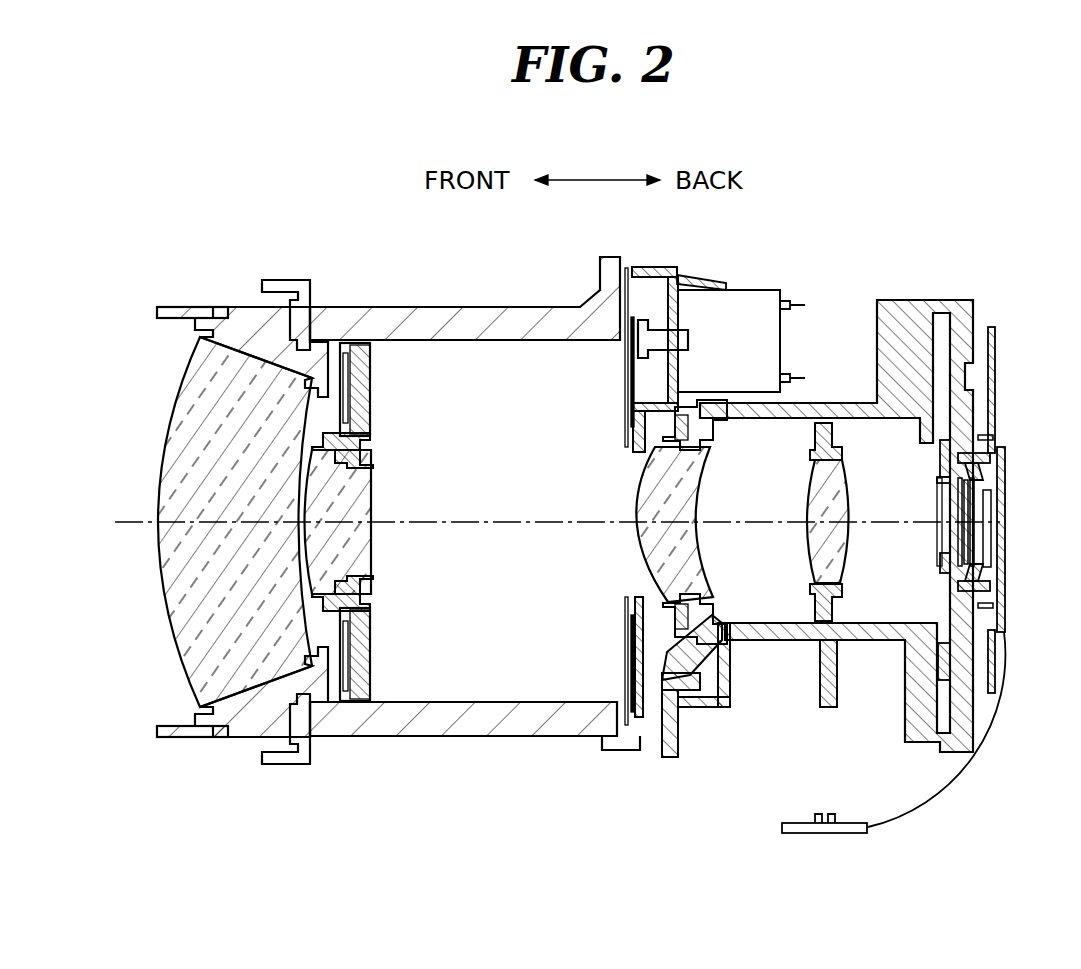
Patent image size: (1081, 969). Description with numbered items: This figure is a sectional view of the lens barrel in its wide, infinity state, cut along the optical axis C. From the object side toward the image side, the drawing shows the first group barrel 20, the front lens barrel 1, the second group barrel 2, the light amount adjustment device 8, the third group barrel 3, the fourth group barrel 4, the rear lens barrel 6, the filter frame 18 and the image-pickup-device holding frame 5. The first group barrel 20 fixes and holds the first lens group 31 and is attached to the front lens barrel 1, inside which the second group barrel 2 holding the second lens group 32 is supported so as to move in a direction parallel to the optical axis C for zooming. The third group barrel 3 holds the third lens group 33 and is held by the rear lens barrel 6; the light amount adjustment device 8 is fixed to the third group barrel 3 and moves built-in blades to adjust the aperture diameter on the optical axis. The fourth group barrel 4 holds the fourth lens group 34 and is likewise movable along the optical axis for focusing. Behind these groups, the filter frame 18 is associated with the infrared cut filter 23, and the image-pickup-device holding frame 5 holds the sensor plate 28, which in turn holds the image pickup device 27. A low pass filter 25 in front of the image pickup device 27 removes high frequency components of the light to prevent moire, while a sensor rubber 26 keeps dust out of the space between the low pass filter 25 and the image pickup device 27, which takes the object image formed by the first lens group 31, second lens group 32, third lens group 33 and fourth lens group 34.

The front lens barrel 1 is at (373, 737).
The second group barrel 2 is at (363, 342).
The third group barrel 3 is at (688, 686).
The fourth group barrel 4 is at (822, 579).
The image-pickup-device holding frame 5 is at (966, 305).
The rear lens barrel 6 is at (827, 710).
The light amount adjustment device 8 is at (745, 300).
The filter frame 18 is at (940, 462).
The first group barrel 20 is at (157, 311).
The infrared cut filter 23 is at (950, 512).
The low pass filter 25 is at (973, 536).
The sensor rubber 26 is at (975, 467).
The image pickup device 27 is at (990, 561).
The sensor plate 28 is at (997, 393).
The first lens group 31 is at (163, 440).
The second lens group 32 is at (371, 495).
The third lens group 33 is at (640, 555).
The fourth lens group 34 is at (840, 562).
The optical axis C is at (130, 523).